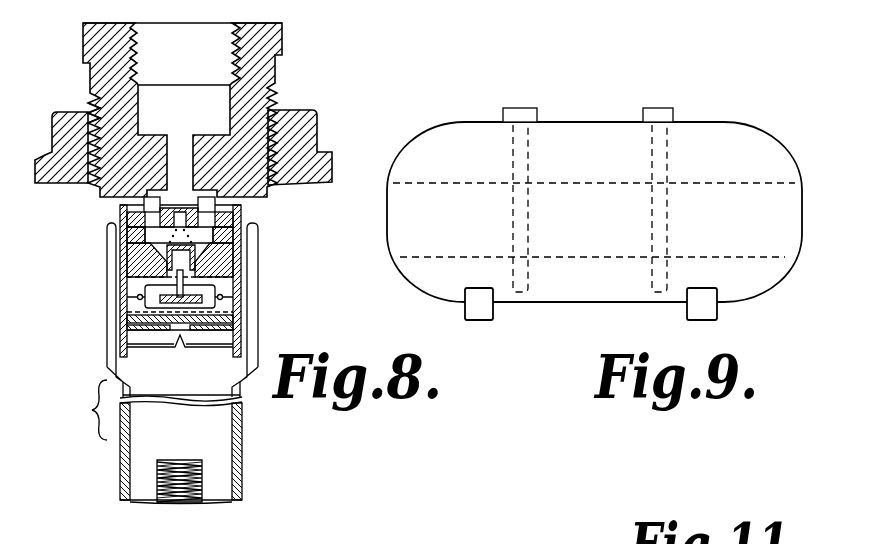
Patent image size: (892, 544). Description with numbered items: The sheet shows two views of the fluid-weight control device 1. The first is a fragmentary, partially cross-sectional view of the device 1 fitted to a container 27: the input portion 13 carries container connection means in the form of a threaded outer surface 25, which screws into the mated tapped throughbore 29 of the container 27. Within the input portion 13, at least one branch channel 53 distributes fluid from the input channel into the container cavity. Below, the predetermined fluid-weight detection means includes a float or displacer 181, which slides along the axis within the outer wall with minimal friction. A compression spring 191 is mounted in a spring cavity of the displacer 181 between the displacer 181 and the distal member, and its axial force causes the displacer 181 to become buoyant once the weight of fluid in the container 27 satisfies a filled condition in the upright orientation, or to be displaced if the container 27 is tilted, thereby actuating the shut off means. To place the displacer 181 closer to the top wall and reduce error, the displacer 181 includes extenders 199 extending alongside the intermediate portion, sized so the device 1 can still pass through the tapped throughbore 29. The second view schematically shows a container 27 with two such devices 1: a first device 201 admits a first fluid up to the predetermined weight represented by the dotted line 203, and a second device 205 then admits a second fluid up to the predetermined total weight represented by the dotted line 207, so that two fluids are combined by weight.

In FIG. 8, the fluid-weight control device 1 is at (303, 235).
In FIG. 9, the fluid-weight control device 1 is at (425, 123).
In FIG. 8, the input portion 13 is at (282, 82).
In FIG. 8, the threaded outer surface 25 is at (92, 115).
In FIG. 8, the container 27 is at (318, 140).
In FIG. 9, the container 27 is at (760, 135).
In FIG. 8, the tapped throughbore 29 is at (97, 138).
In FIG. 8, the branch channel 53 is at (128, 206).
In FIG. 8, the displacer 181 is at (193, 380).
In FIG. 8, the compression spring 191 is at (187, 461).
In FIG. 8, the extenders 199 is at (260, 298).
In FIG. 9, the first device 201 is at (535, 110).
In FIG. 9, the dotted line 203 is at (615, 255).
In FIG. 9, the second device 205 is at (673, 110).
In FIG. 9, the dotted line 207 is at (562, 182).